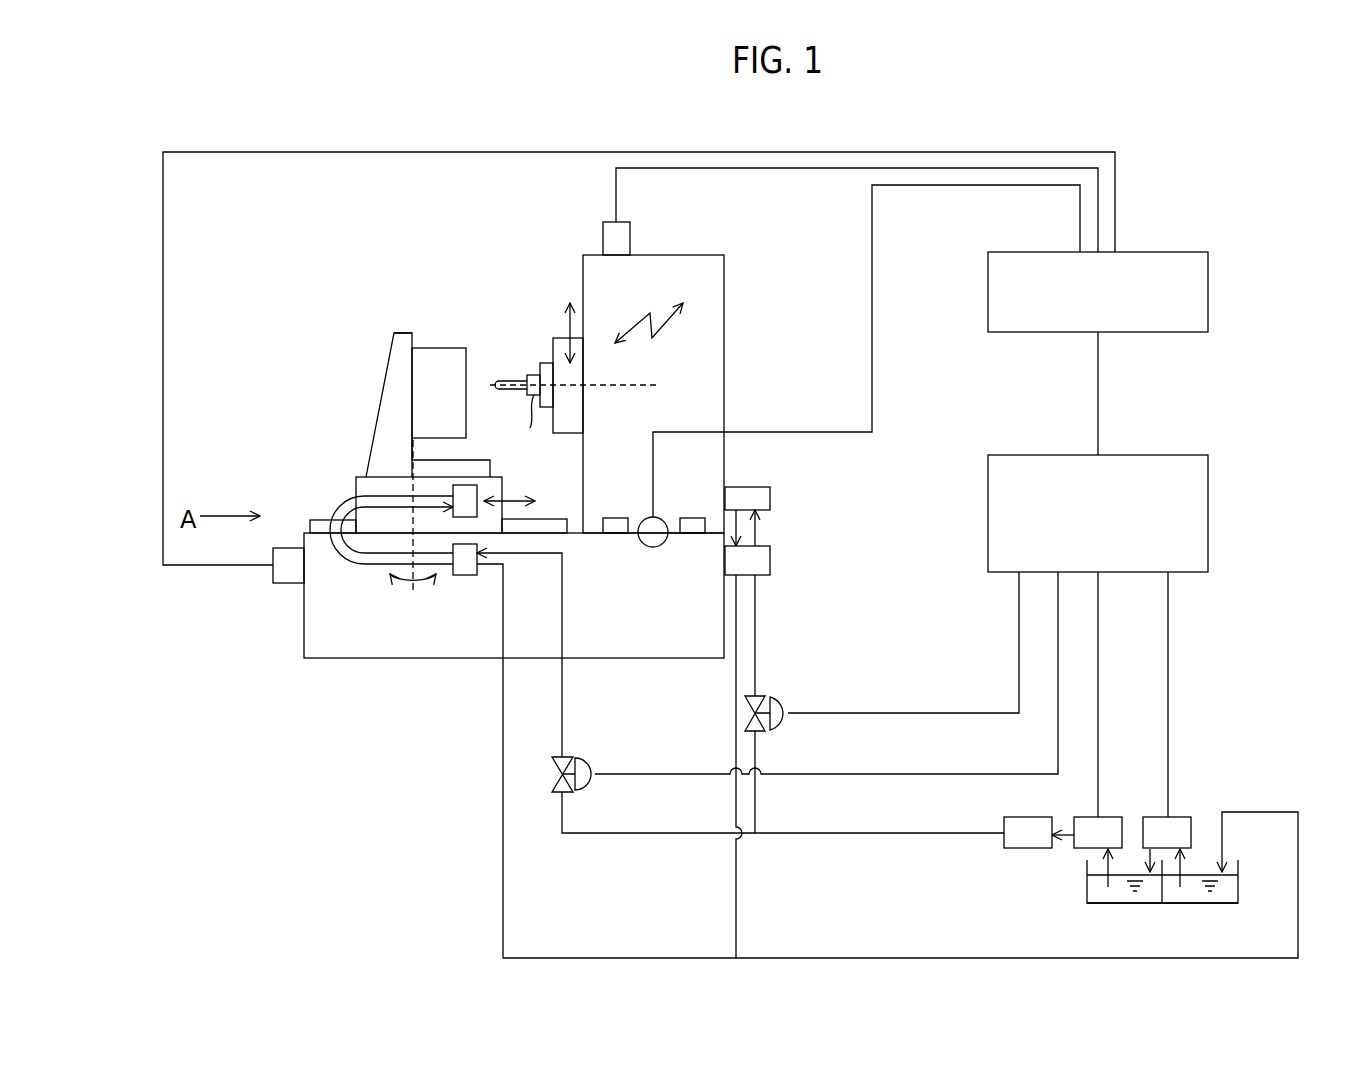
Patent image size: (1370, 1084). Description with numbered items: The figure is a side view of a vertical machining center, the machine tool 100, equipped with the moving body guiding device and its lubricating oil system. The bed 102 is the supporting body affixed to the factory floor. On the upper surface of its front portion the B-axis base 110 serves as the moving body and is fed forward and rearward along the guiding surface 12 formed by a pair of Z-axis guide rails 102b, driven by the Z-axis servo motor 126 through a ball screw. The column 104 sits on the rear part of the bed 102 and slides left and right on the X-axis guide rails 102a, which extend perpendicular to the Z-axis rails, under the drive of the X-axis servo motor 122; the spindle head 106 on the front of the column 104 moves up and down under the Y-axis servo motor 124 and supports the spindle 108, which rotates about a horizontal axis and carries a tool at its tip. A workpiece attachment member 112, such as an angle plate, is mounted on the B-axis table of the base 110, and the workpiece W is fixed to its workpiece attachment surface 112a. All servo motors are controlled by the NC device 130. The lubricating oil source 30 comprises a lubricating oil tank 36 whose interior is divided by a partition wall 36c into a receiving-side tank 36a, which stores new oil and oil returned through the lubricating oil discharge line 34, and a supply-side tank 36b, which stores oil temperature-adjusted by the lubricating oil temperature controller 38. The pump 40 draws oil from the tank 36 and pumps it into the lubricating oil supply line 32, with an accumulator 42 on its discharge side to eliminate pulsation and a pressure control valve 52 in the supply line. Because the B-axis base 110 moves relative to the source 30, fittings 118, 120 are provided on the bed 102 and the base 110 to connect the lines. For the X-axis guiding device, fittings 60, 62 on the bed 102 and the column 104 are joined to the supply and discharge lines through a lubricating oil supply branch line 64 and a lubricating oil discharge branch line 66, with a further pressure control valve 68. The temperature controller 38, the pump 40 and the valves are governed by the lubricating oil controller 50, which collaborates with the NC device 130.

The machine tool 100 is at (1218, 185).
The bed 102 is at (387, 640).
The X-axis guide rails 102a is at (688, 533).
The Z-axis guide rails 102b is at (556, 519).
The column 104 is at (713, 312).
The spindle head 106 is at (557, 357).
The spindle 108 is at (548, 372).
The B-axis base 110 is at (367, 486).
The workpiece attachment member 112 is at (395, 379).
The workpiece attachment surface 112a is at (417, 335).
The fitting 118 is at (462, 575).
The fitting 120 is at (468, 487).
The X-axis servo motor 122 is at (660, 518).
The Y-axis servo motor 124 is at (631, 228).
The Z-axis servo motor 126 is at (280, 583).
The guiding surface 12 is at (322, 520).
The NC device 130 is at (1212, 292).
The lubricating oil controller 50 is at (1212, 493).
The fitting 60 is at (771, 498).
The fitting 62 is at (771, 562).
The lubricating oil supply branch line 64 is at (756, 650).
The lubricating oil discharge branch line 66 is at (737, 607).
The pressure control valve 68 is at (770, 692).
The pressure control valve 52 is at (573, 757).
The lubricating oil supply line 32 is at (545, 556).
The lubricating oil discharge line 34 is at (505, 900).
The lubricating oil source 30 is at (1245, 800).
The lubricating oil tank 36 is at (1242, 885).
The receiving-side tank 36a is at (1225, 904).
The supply-side tank 36b is at (1120, 904).
The partition wall 36c is at (1162, 904).
The lubricating oil temperature controller 38 is at (1190, 822).
The pump 40 is at (1078, 849).
The accumulator 42 is at (1035, 849).
The workpiece W is at (440, 348).